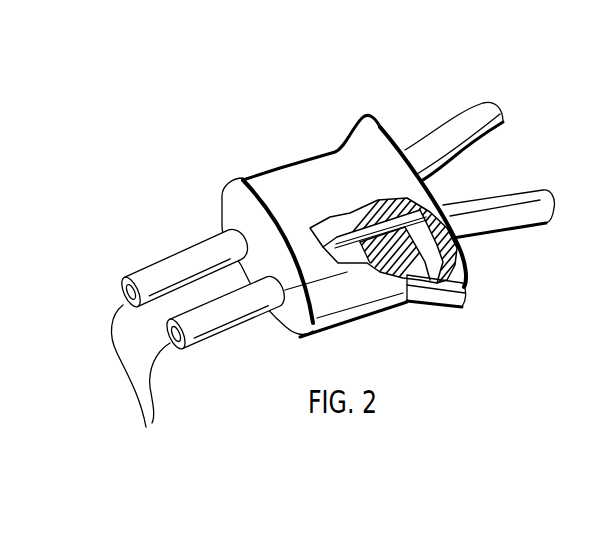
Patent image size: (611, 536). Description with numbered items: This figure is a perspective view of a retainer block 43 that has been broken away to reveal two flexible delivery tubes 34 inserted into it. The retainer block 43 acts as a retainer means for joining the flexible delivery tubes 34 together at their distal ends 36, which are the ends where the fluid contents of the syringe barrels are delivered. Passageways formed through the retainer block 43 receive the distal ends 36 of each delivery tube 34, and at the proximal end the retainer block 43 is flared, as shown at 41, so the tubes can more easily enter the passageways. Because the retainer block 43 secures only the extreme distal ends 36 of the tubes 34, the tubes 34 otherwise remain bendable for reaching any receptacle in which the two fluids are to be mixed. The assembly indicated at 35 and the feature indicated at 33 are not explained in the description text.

The electrical connector plug 35 is at (427, 83).
The plug housing body 43 is at (301, 182).
The lead wires 34 is at (462, 130).
The sectioned terminal block 33 is at (438, 266).
The bottom flange 41 is at (433, 307).
The electrical cord 36 is at (152, 423).